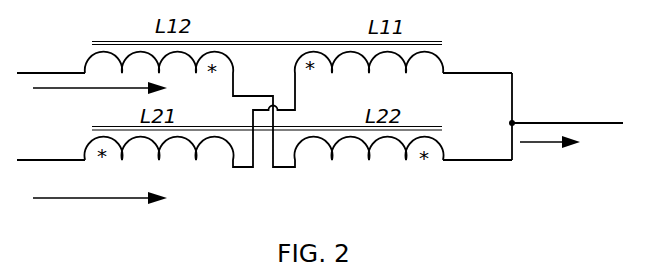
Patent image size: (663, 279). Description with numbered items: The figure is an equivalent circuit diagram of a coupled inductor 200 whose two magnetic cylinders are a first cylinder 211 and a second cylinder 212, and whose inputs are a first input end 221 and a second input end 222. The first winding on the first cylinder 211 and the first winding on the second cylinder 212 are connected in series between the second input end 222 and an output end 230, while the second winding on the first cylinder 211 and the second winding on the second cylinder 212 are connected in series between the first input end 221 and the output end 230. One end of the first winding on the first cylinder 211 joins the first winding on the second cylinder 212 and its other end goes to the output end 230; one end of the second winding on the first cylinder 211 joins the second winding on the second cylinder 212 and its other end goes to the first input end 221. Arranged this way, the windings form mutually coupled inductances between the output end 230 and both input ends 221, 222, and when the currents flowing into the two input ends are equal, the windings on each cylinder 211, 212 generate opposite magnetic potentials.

The coupled inductor 200 is at (596, 44).
The first input end 221 is at (92, 61).
The second input end 222 is at (92, 159).
The first cylinder 211 is at (477, 77).
The second cylinder 212 is at (477, 138).
The output end 230 is at (566, 131).